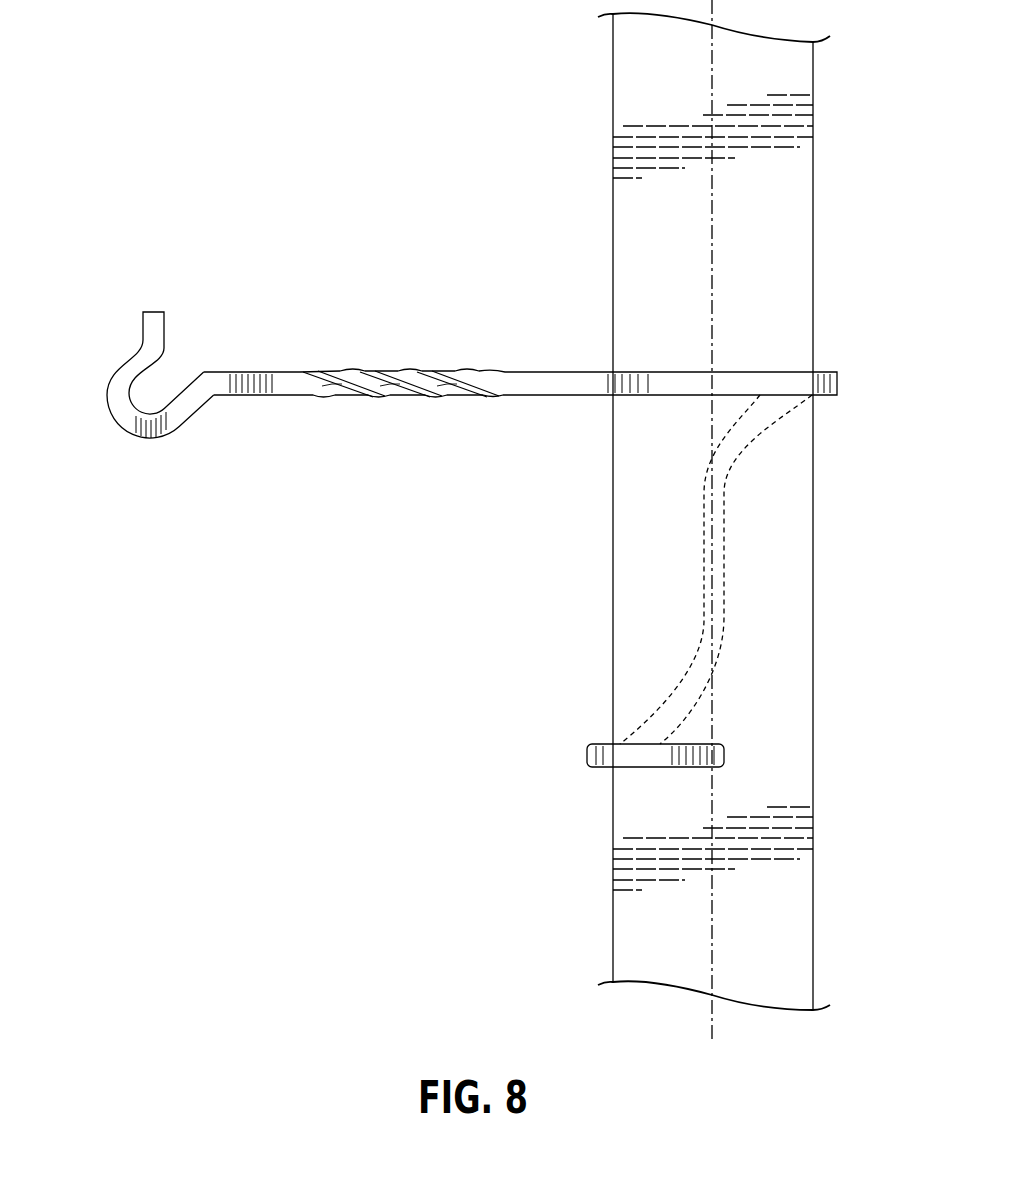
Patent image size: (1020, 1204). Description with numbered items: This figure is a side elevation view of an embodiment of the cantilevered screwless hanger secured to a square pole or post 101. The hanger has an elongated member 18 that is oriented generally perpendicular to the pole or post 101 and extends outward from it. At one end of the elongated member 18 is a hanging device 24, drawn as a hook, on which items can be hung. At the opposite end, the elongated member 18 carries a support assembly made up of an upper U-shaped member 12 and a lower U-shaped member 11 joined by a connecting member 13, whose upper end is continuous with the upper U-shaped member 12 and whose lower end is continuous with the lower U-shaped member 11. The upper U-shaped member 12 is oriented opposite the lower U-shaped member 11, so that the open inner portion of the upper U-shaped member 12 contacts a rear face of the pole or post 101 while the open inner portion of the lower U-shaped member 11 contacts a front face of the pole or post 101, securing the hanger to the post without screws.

The square pole or post 101 is at (772, 278).
The hanging device 24 is at (133, 425).
The elongated member 18 is at (565, 388).
The upper U-shaped member 12 is at (830, 387).
The connecting member 13 is at (725, 605).
The lower U-shaped member 11 is at (595, 760).